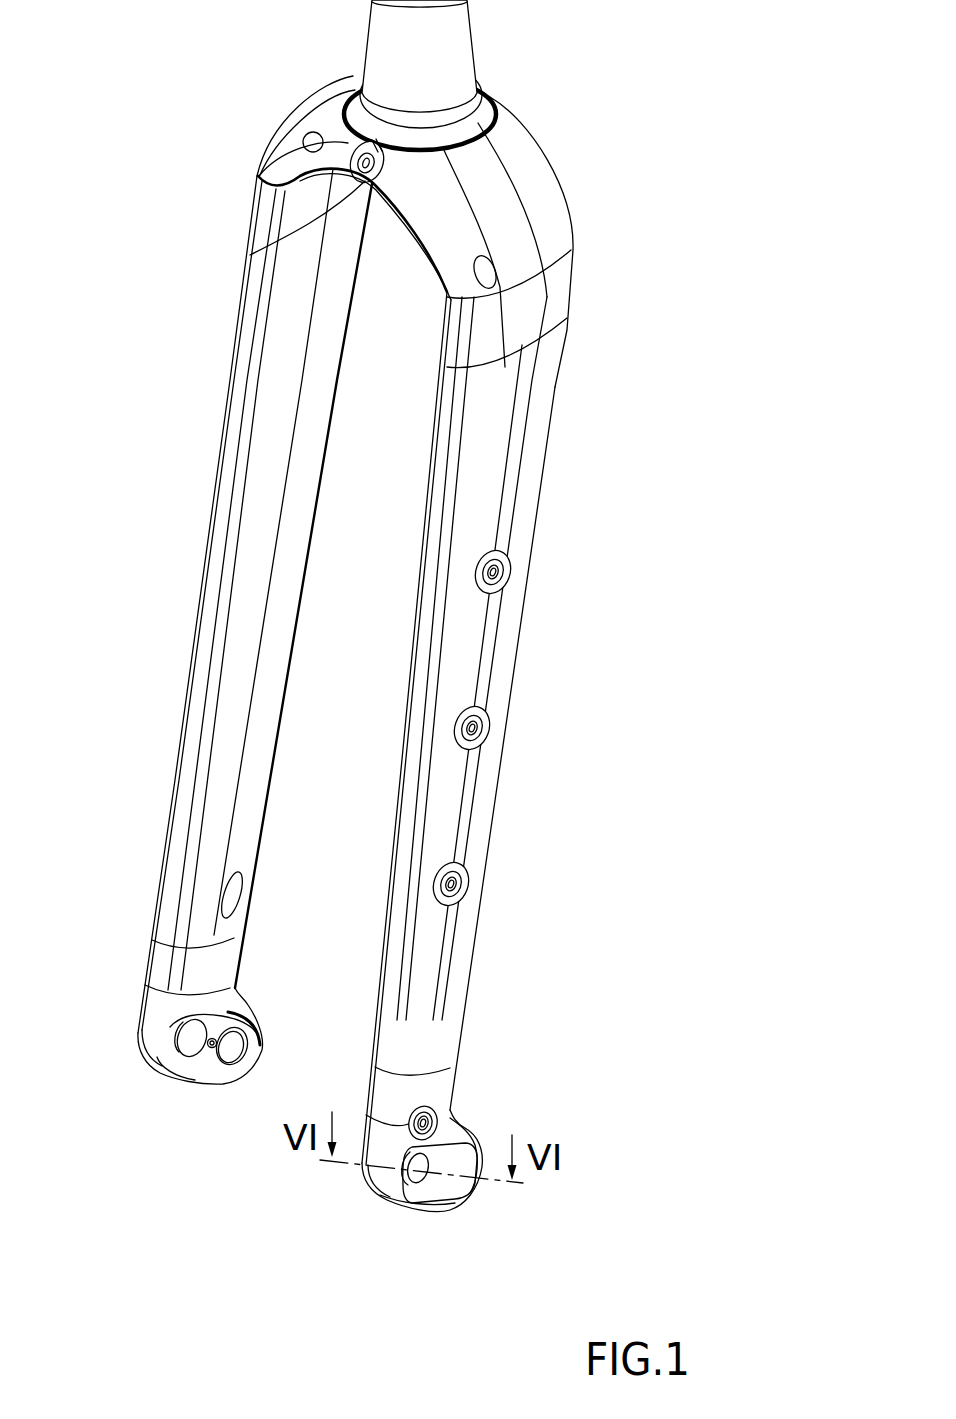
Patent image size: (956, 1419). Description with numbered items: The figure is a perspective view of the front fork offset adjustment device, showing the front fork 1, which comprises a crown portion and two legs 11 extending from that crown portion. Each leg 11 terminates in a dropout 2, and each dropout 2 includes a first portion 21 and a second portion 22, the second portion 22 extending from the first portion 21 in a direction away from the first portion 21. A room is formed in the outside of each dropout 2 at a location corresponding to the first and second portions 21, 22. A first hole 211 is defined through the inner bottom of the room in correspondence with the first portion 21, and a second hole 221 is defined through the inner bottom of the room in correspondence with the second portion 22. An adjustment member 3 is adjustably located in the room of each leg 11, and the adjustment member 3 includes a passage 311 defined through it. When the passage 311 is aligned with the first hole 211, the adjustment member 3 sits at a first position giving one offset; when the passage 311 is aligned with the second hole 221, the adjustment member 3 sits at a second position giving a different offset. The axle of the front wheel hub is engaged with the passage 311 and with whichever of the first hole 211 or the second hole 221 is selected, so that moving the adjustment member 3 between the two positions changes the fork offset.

The front fork 1 is at (403, 582).
The leg 11 is at (540, 488).
The dropout 2 is at (480, 1120).
The first portion 21 is at (148, 1057).
The second portion 22 is at (260, 1042).
The second hole 221 is at (245, 1050).
The first hole 211 is at (205, 1055).
The adjustment member 3 is at (455, 1207).
The passage 311 is at (190, 1037).